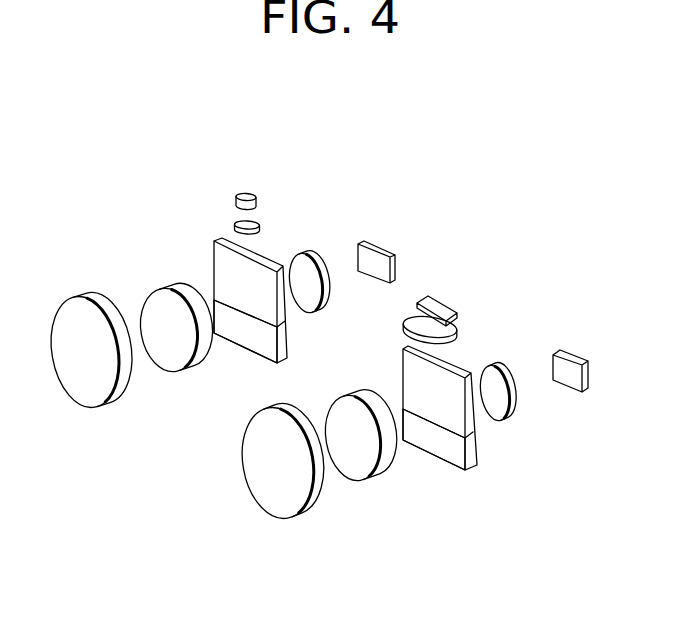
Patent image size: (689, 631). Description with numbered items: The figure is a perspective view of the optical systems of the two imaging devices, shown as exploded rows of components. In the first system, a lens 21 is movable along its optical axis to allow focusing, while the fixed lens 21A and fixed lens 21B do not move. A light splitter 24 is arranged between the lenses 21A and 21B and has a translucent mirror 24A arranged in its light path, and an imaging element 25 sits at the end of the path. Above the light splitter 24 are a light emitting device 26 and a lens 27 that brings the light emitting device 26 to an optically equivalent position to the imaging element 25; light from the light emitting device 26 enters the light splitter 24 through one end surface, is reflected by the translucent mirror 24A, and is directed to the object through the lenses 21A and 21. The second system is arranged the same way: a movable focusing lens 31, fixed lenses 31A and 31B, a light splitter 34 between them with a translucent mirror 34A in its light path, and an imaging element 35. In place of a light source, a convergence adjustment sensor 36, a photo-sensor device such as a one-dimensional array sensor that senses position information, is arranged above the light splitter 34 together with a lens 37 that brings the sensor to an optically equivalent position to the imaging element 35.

The lens 21 is at (60, 322).
The fixed lens 21A is at (150, 302).
The fixed lens 21B is at (315, 258).
The light splitter 24 is at (267, 257).
The translucent mirror 24A is at (250, 318).
The imaging element 25 is at (397, 263).
The light emitting device 26 is at (237, 200).
The lens 27 is at (235, 226).
The lens 31 is at (280, 500).
The fixed lens 31A is at (357, 467).
The fixed lens 31B is at (500, 410).
The light splitter 34 is at (460, 363).
The translucent mirror 34A is at (437, 428).
The imaging element 35 is at (587, 375).
The convergence adjustment sensor 36 is at (440, 307).
The lens 37 is at (452, 340).